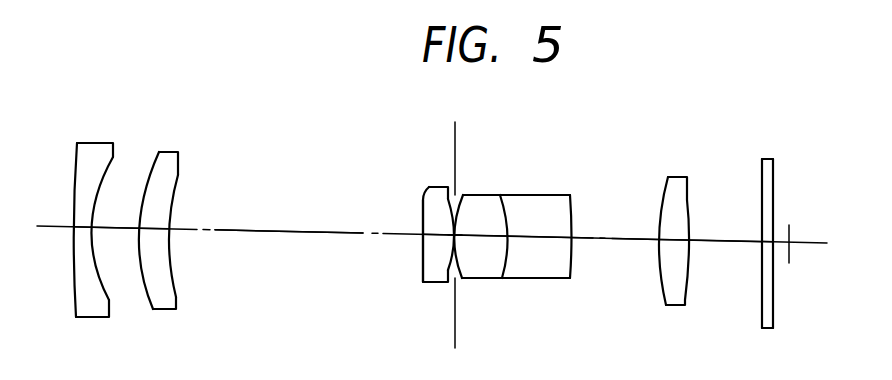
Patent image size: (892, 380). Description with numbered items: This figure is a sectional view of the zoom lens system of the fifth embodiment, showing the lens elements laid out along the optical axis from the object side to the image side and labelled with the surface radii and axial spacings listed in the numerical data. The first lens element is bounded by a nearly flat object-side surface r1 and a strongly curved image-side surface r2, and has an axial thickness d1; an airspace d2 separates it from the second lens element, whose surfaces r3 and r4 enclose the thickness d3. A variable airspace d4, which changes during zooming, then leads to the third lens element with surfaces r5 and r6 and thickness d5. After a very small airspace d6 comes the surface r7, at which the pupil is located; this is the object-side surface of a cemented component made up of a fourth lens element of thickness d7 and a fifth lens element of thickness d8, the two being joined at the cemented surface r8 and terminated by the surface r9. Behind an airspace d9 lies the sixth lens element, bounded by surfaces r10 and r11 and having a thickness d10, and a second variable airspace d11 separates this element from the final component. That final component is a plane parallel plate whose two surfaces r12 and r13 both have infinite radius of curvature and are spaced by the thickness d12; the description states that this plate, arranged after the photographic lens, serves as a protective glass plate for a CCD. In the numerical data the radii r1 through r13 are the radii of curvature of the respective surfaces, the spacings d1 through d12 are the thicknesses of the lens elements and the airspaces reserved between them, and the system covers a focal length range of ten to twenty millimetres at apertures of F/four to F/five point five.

The radius of curvature of first lens surface r1 is at (77, 158).
The radius of curvature of second lens surface r2 is at (104, 170).
The radius of curvature of third lens surface r3 is at (149, 167).
The radius of curvature of fourth lens surface r4 is at (179, 177).
The radius of curvature of fifth lens surface r5 is at (422, 200).
The radius of curvature of sixth lens surface r6 is at (449, 200).
The radius of curvature of seventh lens surface (pupil) r7 is at (460, 207).
The radius of curvature of eighth lens surface r8 is at (505, 207).
The radius of curvature of ninth lens surface r9 is at (571, 220).
The radius of curvature of tenth lens surface r10 is at (664, 207).
The radius of curvature of eleventh lens surface r11 is at (688, 207).
The radius of curvature of twelfth surface r12 is at (762, 188).
The radius of curvature of thirteenth surface r13 is at (773, 195).
The thickness of first lens element d1 is at (75, 248).
The airspace between first and second lens elements d2 is at (120, 232).
The thickness of second lens element d3 is at (155, 232).
The variable airspace between second and third lens elements d4 is at (297, 233).
The thickness of third lens element d5 is at (423, 252).
The airspace between third and fourth lens elements d6 is at (451, 243).
The thickness of fourth lens element d7 is at (478, 240).
The thickness of fifth lens element d8 is at (543, 240).
The airspace between fifth and sixth lens elements d9 is at (620, 243).
The thickness of sixth lens element d10 is at (675, 243).
The variable airspace between sixth lens element and plate d11 is at (718, 243).
The thickness of plane parallel plate d12 is at (768, 247).